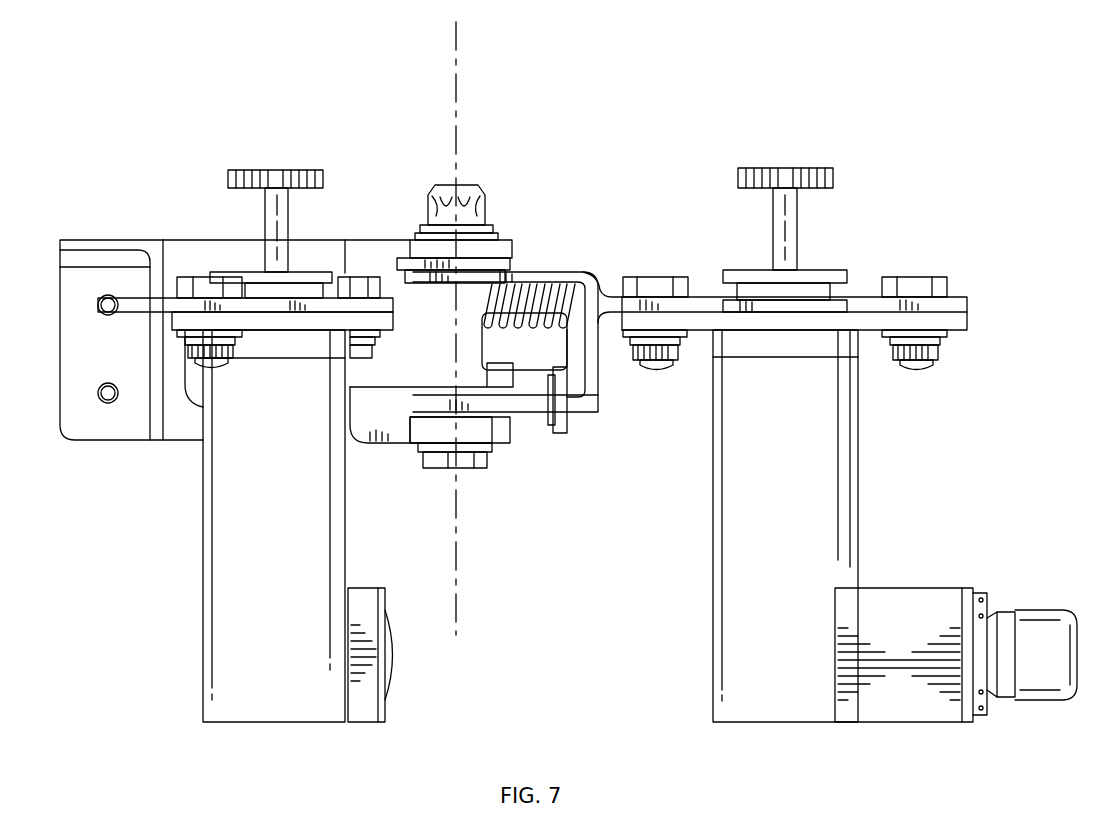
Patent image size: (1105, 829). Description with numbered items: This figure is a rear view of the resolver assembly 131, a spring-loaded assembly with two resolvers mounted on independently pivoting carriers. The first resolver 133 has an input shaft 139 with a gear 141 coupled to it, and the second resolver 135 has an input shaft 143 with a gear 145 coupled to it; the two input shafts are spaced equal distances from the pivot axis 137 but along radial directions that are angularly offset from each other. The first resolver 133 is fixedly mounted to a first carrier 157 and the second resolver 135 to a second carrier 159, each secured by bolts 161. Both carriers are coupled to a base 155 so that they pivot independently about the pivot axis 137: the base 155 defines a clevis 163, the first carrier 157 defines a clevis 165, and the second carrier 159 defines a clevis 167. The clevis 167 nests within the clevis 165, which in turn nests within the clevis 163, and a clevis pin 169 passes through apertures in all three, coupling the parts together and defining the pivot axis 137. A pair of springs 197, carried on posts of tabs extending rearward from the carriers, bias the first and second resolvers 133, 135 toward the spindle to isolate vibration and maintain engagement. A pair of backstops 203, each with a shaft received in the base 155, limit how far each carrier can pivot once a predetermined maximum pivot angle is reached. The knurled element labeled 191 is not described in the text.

The resolver assembly 131 is at (912, 80).
The first resolver 133 is at (772, 722).
The second resolver 135 is at (275, 722).
The pivot axis 137 is at (455, 98).
The input shaft 139 is at (800, 236).
The gear 141 is at (805, 168).
The input shaft 143 is at (265, 227).
The gear 145 is at (258, 170).
The base 155 is at (117, 440).
The first carrier 157 is at (697, 305).
The second carrier 159 is at (138, 297).
The bolts 161 is at (948, 288).
The clevis 163 is at (513, 250).
The clevis 165 is at (586, 405).
The clevis 167 is at (487, 383).
The clevis pin 169 is at (432, 468).
The knurled knob 191 is at (228, 180).
The springs 197 is at (560, 298).
The backstops 203 is at (560, 434).